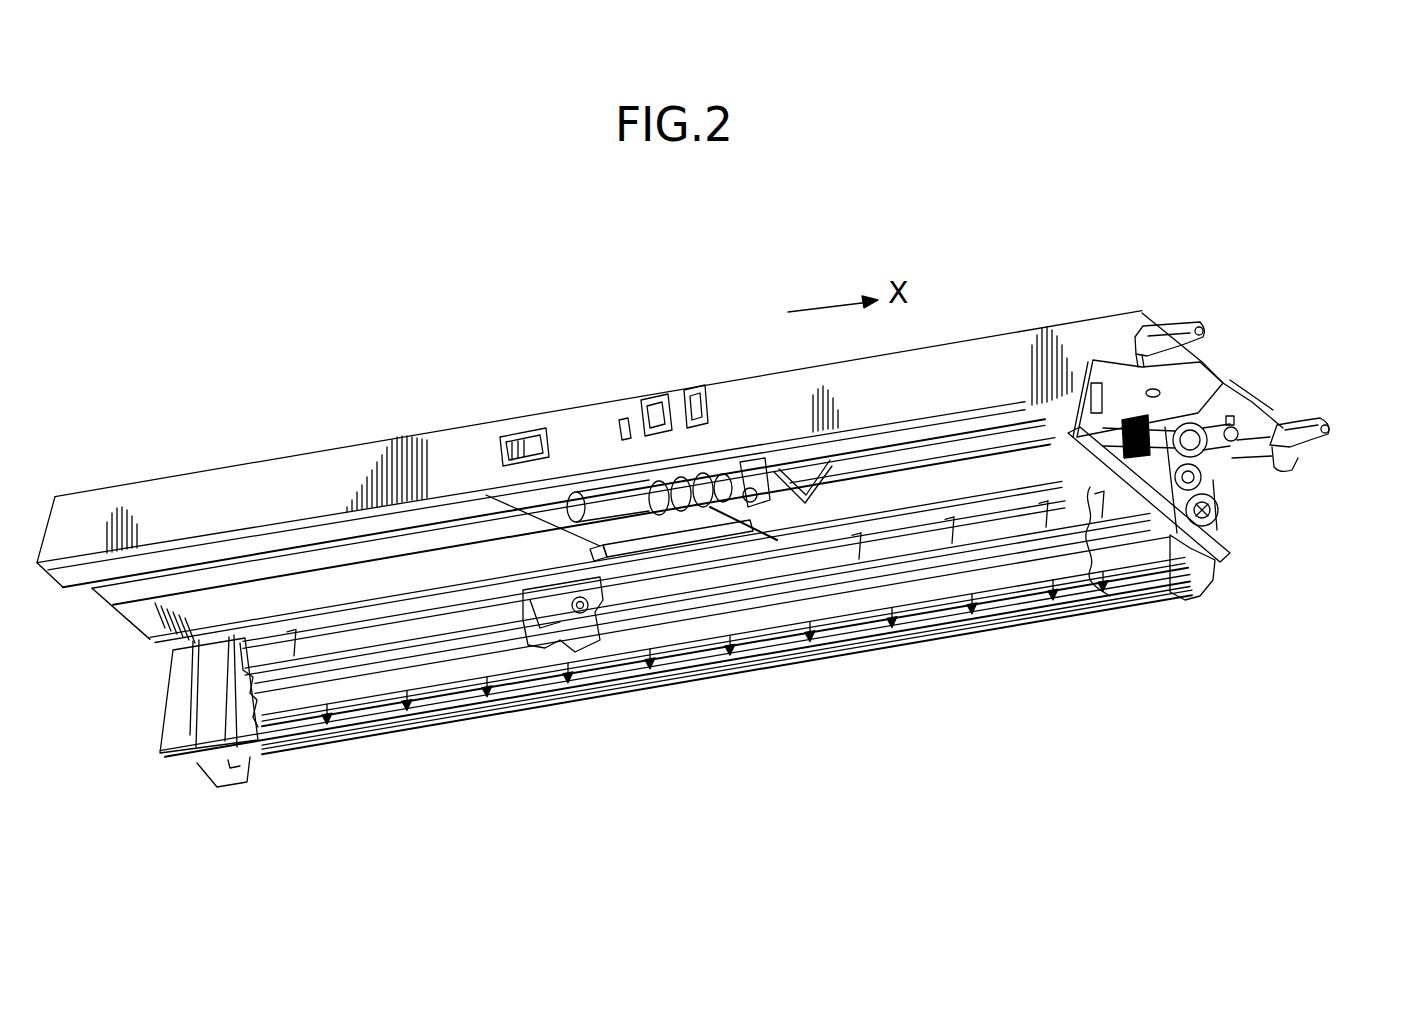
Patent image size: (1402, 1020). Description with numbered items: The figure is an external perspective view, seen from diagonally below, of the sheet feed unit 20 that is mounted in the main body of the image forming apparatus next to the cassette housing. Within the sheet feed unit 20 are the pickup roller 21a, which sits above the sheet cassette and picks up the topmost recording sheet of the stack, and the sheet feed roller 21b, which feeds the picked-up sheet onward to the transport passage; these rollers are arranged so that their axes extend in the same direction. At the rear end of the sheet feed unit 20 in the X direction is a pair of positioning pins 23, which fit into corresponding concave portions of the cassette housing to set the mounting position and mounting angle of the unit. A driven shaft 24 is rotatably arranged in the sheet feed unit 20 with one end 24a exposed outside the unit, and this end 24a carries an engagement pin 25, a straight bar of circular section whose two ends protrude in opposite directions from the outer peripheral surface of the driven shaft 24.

The sheet feed unit 20 is at (313, 406).
The pickup roller 21a is at (612, 517).
The sheet feed roller 21b is at (677, 550).
The positioning pins 23 is at (1318, 422).
The driven shaft 24 is at (1220, 455).
The end of the driven shaft 24a is at (1238, 437).
The engagement pin 25 is at (1213, 446).